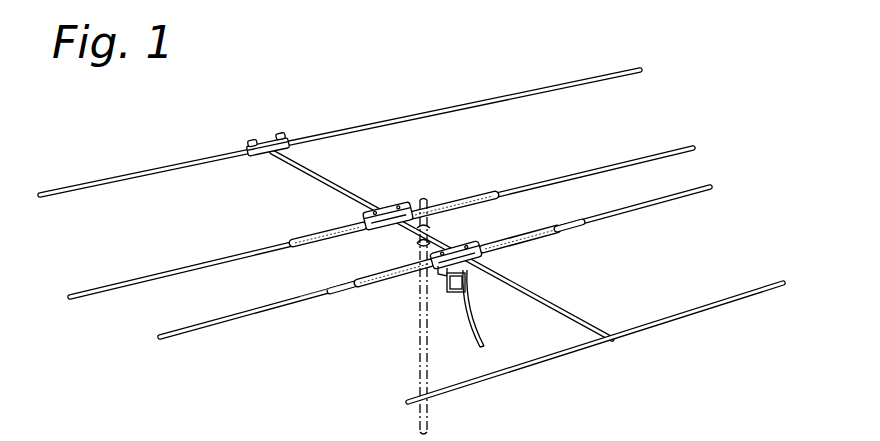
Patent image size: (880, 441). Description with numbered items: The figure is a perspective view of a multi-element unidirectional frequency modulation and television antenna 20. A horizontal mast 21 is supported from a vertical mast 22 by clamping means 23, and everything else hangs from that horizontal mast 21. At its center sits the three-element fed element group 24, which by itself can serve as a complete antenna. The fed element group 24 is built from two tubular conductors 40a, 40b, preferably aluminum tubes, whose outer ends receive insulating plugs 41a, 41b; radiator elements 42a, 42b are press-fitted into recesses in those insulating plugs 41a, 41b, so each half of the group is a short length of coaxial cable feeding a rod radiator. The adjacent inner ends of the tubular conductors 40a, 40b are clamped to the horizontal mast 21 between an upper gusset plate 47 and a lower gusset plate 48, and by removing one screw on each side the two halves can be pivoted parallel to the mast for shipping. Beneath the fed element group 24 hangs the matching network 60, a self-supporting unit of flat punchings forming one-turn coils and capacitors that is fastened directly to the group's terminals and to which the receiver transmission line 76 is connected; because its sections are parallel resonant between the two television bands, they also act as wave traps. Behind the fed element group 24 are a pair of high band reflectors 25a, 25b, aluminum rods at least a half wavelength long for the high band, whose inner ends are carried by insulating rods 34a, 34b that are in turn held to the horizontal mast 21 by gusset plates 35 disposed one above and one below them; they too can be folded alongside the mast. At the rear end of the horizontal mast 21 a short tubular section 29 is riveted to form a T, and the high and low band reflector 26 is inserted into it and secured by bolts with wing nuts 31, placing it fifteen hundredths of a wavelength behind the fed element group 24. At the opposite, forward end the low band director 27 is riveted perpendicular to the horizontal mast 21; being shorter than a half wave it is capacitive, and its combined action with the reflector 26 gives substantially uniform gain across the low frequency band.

The antenna 20 is at (624, 392).
The horizontal mast 21 is at (536, 297).
The vertical mast 22 is at (418, 370).
The clamping means 23 is at (417, 244).
The fed element group 24 is at (320, 300).
The high band reflector 25a is at (618, 165).
The high band reflector 25b is at (160, 273).
The high and low band reflector 26 is at (150, 172).
The low band director 27 is at (690, 278).
The tubular section 29 is at (267, 144).
The wing nuts 31 is at (252, 141).
The insulating rod 34a is at (470, 197).
The insulating rod 34b is at (310, 212).
The gusset plates 35 is at (387, 205).
The tubular conductor 40a is at (531, 232).
The tubular conductor 40b is at (365, 276).
The insulating plug 41a is at (578, 226).
The insulating plug 41b is at (327, 286).
The radiator element 42a is at (228, 316).
The radiator element 42b is at (680, 196).
The upper gusset plate 47 is at (461, 249).
The lower gusset plate 48 is at (440, 273).
The matching network 60 is at (458, 292).
The receiver transmission line 76 is at (483, 320).